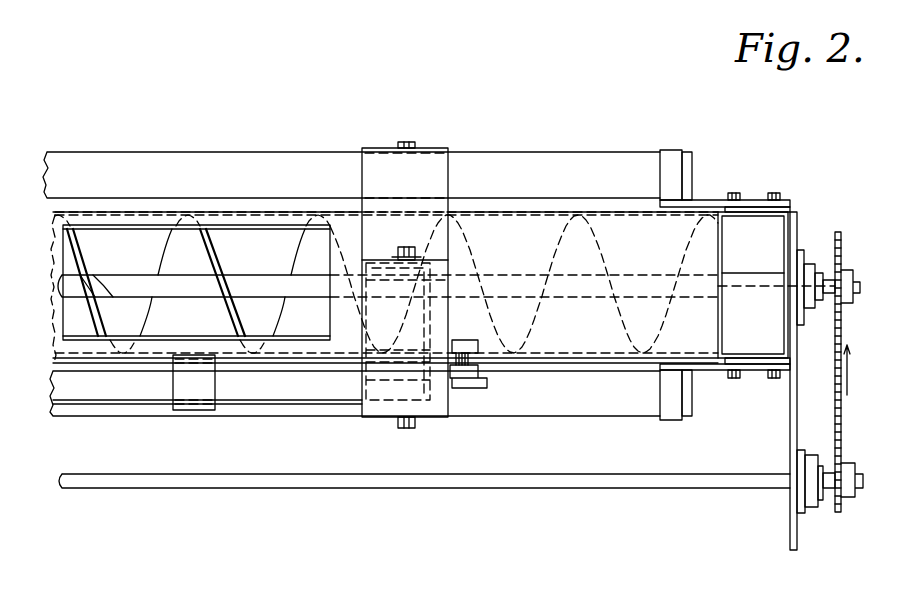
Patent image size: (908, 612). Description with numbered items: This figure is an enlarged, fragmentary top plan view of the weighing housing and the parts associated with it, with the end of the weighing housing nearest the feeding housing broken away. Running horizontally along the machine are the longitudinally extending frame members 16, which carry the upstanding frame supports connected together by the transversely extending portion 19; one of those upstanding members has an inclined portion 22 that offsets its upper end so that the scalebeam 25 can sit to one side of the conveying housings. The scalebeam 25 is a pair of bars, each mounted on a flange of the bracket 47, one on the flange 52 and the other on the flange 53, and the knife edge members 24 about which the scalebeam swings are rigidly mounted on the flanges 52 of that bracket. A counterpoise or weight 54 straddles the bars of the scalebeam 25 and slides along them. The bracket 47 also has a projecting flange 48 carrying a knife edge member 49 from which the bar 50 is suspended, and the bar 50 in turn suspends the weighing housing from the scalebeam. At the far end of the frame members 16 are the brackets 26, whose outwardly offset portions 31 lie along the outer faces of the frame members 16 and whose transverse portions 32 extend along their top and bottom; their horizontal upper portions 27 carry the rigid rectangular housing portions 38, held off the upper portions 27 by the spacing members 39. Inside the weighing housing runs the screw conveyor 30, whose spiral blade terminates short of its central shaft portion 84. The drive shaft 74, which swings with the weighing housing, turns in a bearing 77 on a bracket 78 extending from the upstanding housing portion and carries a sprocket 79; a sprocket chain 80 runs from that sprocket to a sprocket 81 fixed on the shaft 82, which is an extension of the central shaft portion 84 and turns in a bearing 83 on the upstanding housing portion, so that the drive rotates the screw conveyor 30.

The frame members 16 is at (608, 162).
The transversely extending portion 19 is at (448, 331).
The inclined portion 22 is at (423, 165).
The knife edge members 24 is at (408, 248).
The scalebeam 25 is at (261, 365).
The brackets 26 is at (672, 203).
The upper portions 27 is at (755, 207).
The screw conveyor 30 is at (177, 271).
The outwardly offset portions 31 is at (681, 153).
The transverse portions 32 is at (686, 173).
The housing portions 38 is at (797, 247).
The spacing members 39 is at (736, 207).
The bracket 47 is at (479, 291).
The flange 48 is at (478, 343).
The knife edge member 49 is at (462, 378).
The bar 50 is at (478, 376).
The flange 52 is at (388, 258).
The flange 53 is at (368, 380).
The counterpoise 54 is at (193, 393).
The shaft 74 is at (568, 485).
The bearing 77 is at (812, 500).
The bracket 78 is at (790, 440).
The sprocket 79 is at (848, 471).
The sprocket chain 80 is at (841, 335).
The sprocket 81 is at (838, 235).
The shaft 82 is at (828, 282).
The bearing 83 is at (808, 265).
The central shaft portion 84 is at (738, 290).